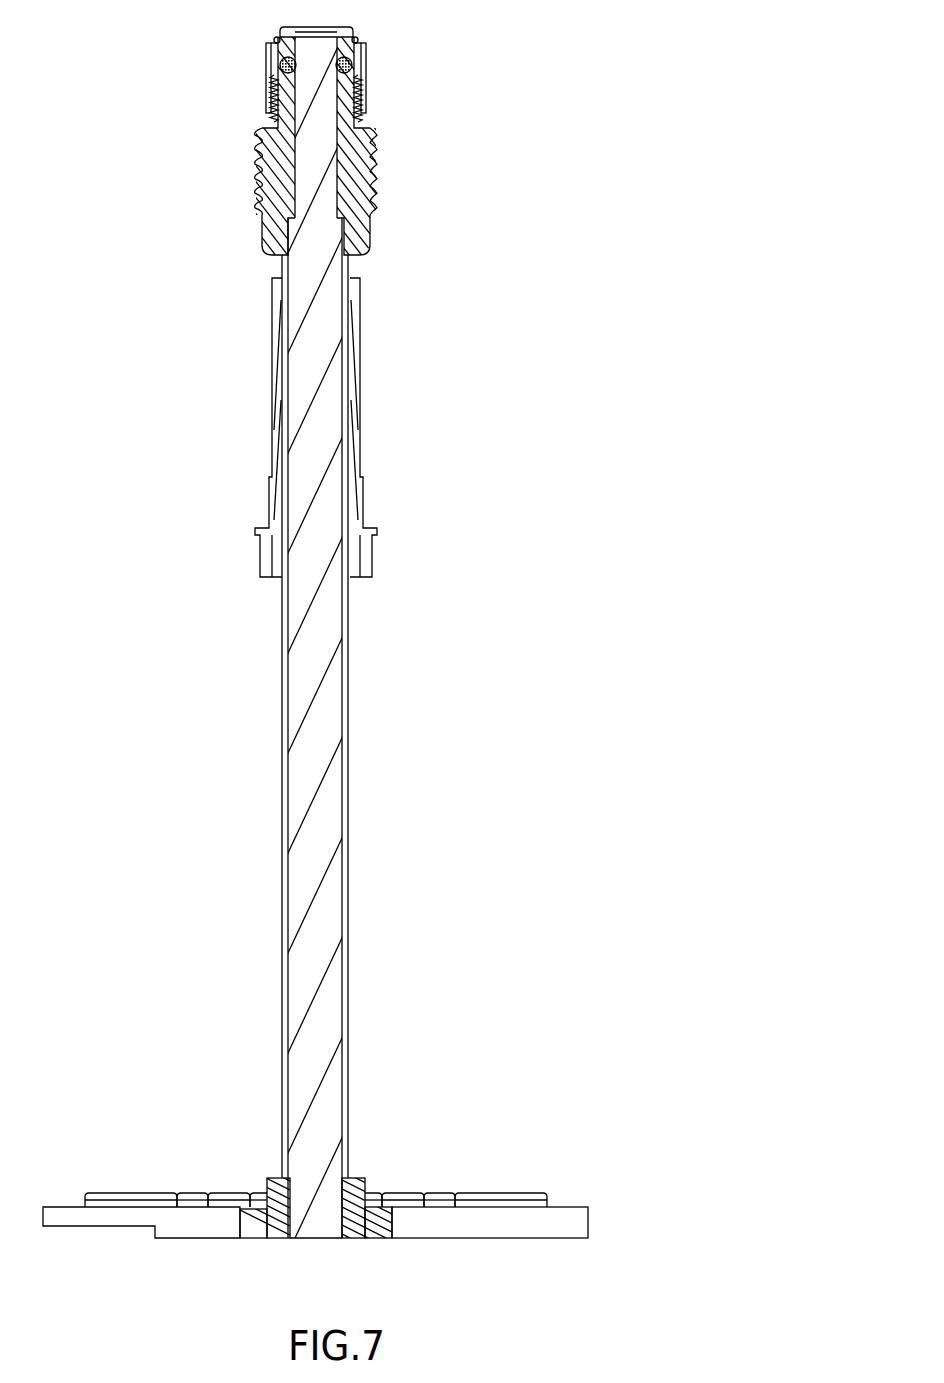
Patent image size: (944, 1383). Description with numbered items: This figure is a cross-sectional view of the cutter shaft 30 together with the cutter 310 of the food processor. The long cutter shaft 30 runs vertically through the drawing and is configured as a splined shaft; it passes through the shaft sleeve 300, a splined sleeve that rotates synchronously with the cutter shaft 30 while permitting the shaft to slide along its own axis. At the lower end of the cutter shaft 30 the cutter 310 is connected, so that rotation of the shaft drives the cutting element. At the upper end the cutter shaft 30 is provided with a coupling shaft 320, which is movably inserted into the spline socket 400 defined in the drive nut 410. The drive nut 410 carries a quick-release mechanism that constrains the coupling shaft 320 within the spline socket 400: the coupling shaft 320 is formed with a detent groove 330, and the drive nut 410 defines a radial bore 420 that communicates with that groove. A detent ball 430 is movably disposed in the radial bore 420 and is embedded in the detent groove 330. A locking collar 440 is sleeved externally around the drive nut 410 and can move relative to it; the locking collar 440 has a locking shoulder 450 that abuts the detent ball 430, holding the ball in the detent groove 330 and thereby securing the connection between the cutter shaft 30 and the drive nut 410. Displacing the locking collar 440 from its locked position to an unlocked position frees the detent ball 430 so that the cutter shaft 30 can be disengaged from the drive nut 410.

The cutter shaft 30 is at (343, 717).
The shaft sleeve 300 is at (347, 413).
The cutter 310 is at (563, 1228).
The coupling shaft 320 is at (324, 145).
The detent groove 330 is at (350, 33).
The spline socket 400 is at (295, 180).
The drive nut 410 is at (265, 200).
The radial bore 420 is at (278, 40).
The detent ball 430 is at (282, 65).
The locking collar 440 is at (268, 98).
The locking shoulder 450 is at (275, 72).